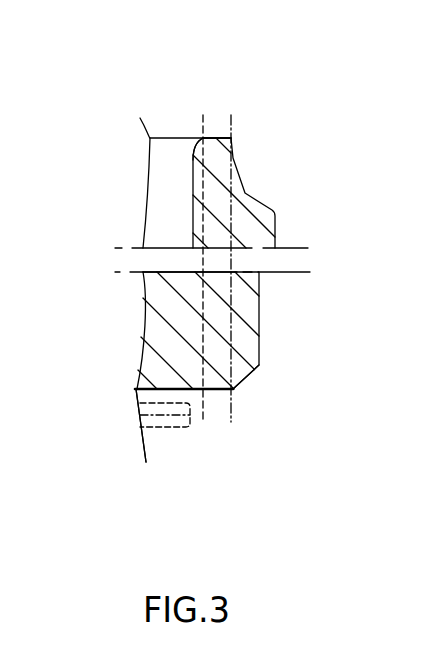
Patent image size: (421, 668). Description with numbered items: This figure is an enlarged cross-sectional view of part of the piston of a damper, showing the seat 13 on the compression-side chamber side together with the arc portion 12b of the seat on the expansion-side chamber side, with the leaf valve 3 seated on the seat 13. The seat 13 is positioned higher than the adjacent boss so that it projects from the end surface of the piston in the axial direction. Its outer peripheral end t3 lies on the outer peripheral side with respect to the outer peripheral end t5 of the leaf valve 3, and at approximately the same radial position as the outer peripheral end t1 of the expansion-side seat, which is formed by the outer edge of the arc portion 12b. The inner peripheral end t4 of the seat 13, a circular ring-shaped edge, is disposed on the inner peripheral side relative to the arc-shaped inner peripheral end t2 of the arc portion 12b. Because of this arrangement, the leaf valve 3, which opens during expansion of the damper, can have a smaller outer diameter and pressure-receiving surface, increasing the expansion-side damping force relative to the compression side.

The leaf valve 3 is at (165, 435).
The arc portion 12b is at (217, 138).
The seat 13 is at (219, 395).
The outer peripheral end t1 is at (231, 138).
The inner peripheral end t2 is at (203, 138).
The outer peripheral end t3 is at (234, 389).
The inner peripheral end t4 is at (162, 386).
The outer peripheral end t5 is at (197, 390).